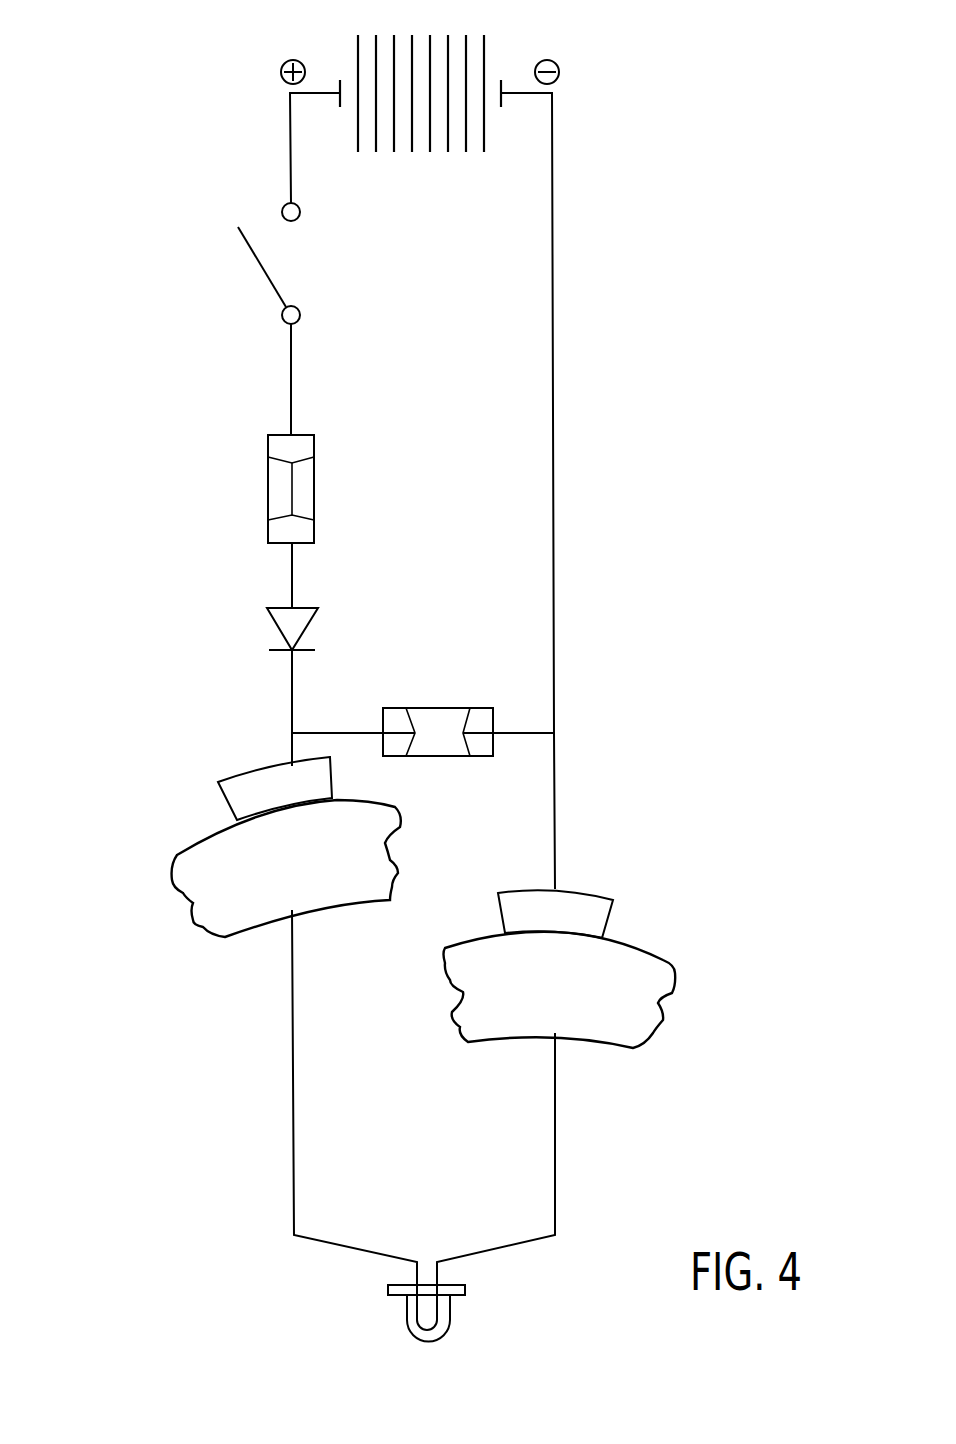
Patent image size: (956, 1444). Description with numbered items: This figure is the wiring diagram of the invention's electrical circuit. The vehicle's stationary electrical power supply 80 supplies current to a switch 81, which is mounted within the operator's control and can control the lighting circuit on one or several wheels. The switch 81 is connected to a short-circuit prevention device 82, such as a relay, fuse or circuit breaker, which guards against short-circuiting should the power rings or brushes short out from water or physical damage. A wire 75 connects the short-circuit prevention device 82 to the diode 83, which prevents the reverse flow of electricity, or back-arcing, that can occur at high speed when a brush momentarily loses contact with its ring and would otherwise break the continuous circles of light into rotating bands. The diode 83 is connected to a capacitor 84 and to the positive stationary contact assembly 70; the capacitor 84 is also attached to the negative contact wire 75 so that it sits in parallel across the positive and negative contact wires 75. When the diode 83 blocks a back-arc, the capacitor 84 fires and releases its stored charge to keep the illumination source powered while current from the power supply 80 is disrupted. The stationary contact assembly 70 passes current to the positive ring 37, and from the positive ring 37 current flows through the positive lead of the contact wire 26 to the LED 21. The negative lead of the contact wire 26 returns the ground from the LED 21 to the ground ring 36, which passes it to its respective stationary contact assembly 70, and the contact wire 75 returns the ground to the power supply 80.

The stationary electrical power supply 80 is at (465, 43).
The switch 81 is at (255, 257).
The short-circuit prevention device 82 is at (268, 484).
The diode 83 is at (283, 643).
The capacitor 84 is at (453, 707).
The contact wire 75 is at (292, 585).
The stationary contact assembly 70 is at (233, 789).
The positive ring 37 is at (192, 860).
The ground ring 36 is at (645, 1020).
The contact wire 26 is at (295, 1082).
The LED 21 is at (405, 1315).